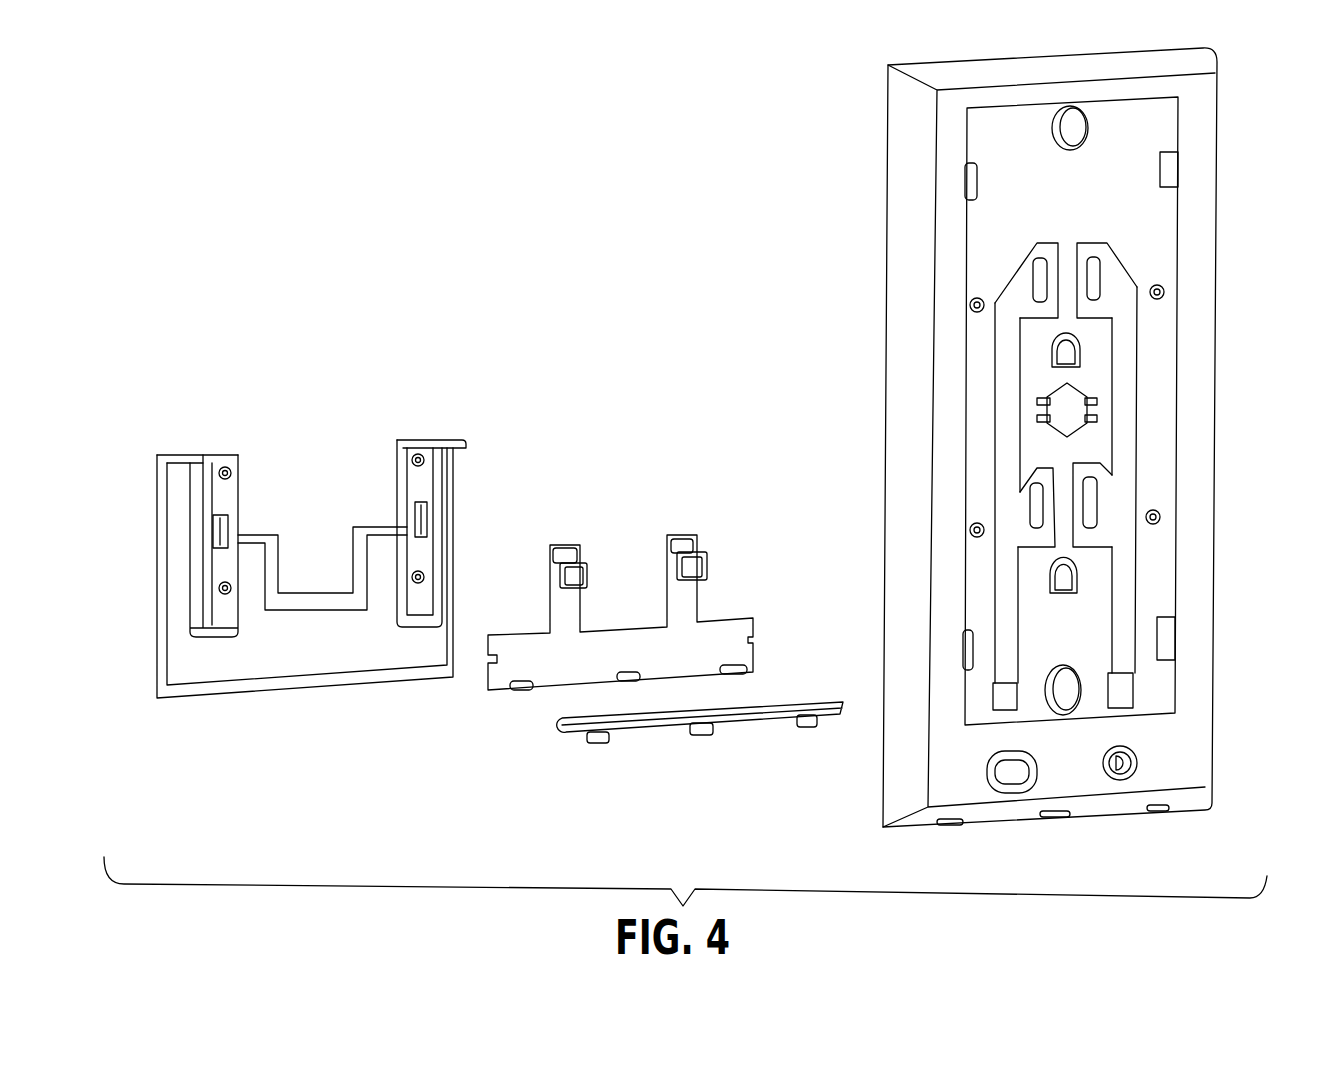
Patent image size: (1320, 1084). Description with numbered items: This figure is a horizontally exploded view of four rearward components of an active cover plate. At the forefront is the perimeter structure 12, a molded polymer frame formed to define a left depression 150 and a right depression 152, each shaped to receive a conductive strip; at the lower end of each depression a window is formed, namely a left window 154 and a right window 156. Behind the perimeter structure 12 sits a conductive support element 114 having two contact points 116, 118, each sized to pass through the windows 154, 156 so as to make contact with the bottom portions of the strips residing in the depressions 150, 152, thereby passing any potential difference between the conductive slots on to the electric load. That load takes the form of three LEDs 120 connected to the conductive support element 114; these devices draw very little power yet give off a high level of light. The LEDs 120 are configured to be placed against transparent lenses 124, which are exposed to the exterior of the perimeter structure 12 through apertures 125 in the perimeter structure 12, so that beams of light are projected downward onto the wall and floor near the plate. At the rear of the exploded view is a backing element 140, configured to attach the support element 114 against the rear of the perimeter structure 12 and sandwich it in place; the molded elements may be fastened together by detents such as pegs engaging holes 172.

The perimeter structure 12 is at (907, 122).
The conductive support element 114 is at (725, 640).
The contact point 116 is at (575, 580).
The contact point 118 is at (703, 570).
The LEDs 120 is at (520, 687).
The transparent lenses 124 is at (598, 737).
The apertures 125 is at (948, 827).
The backing element 140 is at (262, 657).
The left depression 150 is at (1022, 268).
The right depression 152 is at (1107, 240).
The left window 154 is at (1003, 697).
The right window 156 is at (1117, 688).
The holes 172 is at (225, 472).